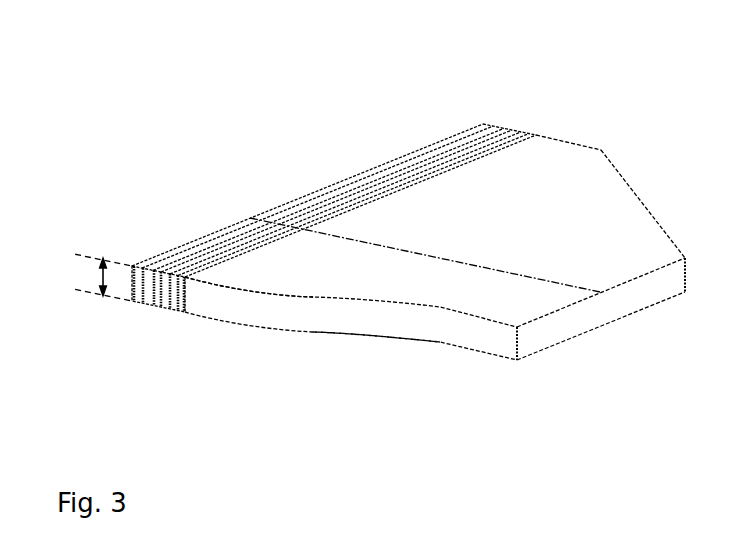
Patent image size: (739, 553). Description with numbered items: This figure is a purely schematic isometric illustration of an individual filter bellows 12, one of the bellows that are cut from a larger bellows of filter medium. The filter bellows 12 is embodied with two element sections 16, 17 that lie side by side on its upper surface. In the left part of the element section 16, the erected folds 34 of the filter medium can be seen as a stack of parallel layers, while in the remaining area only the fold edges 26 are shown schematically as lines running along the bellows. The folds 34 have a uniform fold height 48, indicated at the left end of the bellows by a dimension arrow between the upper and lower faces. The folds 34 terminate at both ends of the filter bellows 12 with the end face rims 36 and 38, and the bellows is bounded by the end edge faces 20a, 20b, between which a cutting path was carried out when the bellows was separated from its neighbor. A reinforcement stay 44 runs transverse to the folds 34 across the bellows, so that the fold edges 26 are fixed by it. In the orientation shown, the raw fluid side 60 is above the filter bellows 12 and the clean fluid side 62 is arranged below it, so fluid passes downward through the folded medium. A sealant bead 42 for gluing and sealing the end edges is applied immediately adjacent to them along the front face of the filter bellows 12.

The filter bellows 12 is at (433, 132).
The folds 34 is at (387, 158).
The end face rim 38 is at (358, 155).
The fold edges 26 is at (262, 250).
The raw fluid side 60 is at (536, 145).
The end edge face 20a is at (622, 144).
The reinforcement stay 44 is at (493, 285).
The element section 16 is at (360, 262).
The element section 17 is at (463, 307).
The end face rim 36 is at (542, 338).
The fold height 48 is at (102, 270).
The end edge face 20b is at (303, 322).
The clean fluid side 62 is at (343, 354).
The sealant bead 42 is at (380, 315).